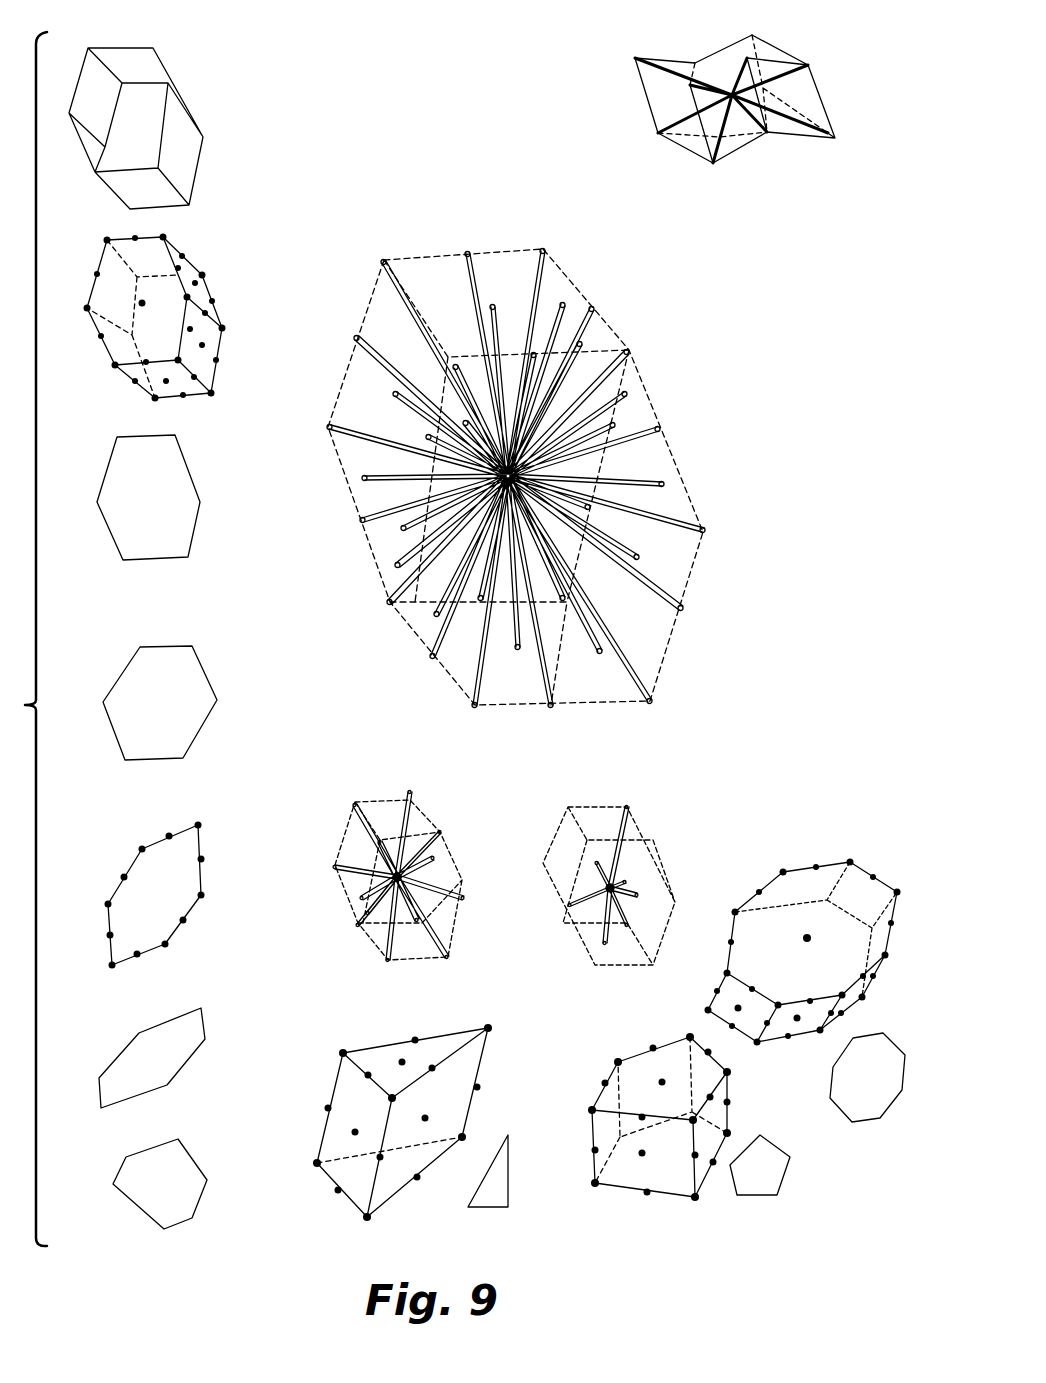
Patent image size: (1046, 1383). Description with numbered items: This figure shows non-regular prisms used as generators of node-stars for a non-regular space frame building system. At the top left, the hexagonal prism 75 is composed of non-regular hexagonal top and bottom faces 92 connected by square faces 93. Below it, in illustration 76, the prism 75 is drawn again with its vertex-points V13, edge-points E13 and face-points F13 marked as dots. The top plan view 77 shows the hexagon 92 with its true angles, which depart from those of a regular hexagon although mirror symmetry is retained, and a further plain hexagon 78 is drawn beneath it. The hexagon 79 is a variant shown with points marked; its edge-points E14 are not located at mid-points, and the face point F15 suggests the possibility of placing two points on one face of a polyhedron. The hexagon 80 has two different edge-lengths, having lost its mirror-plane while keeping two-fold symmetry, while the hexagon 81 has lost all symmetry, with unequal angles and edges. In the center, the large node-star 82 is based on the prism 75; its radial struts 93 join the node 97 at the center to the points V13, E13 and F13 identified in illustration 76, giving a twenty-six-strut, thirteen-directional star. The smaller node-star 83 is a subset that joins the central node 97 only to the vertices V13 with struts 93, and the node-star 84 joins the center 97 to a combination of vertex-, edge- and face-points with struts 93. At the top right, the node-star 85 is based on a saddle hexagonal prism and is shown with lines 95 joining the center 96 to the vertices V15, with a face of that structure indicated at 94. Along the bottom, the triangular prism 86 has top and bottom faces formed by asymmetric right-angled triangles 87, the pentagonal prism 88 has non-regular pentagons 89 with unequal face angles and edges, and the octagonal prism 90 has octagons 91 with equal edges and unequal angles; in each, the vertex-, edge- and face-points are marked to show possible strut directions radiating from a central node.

The hexagonal prism 75 is at (102, 197).
The prism with marked points 76 is at (107, 378).
The top plan view 77 is at (105, 547).
The hexagon 78 is at (102, 757).
The hexagon variant 79 is at (97, 949).
The hexagon with two edge-lengths 80 is at (94, 1112).
The asymmetric hexagon 81 is at (105, 1214).
The node-star 82 is at (386, 678).
The node-star 83 is at (347, 967).
The node-star 84 is at (557, 958).
The node-star 85 is at (653, 155).
The triangular prism 86 is at (325, 1198).
The asymmetric right-angled triangle 87 is at (520, 1208).
The pentagonal prism 88 is at (620, 1200).
The non-regular pentagon 89 is at (733, 1210).
The octagonal prism 90 is at (788, 1053).
The octagon 91 is at (858, 1135).
The hexagonal face 92 is at (135, 72).
The square face 93 is at (180, 108).
The face of star structure 94 is at (832, 120).
The line 95 is at (792, 82).
The center 96 is at (733, 110).
The node 97 is at (460, 472).
The vertex-point V13 is at (208, 275).
The face-point F13 is at (142, 308).
The edge-point E13 is at (197, 392).
The edge-point E14 is at (220, 895).
The face point F15 is at (178, 867).
The vertex V15 is at (638, 53).